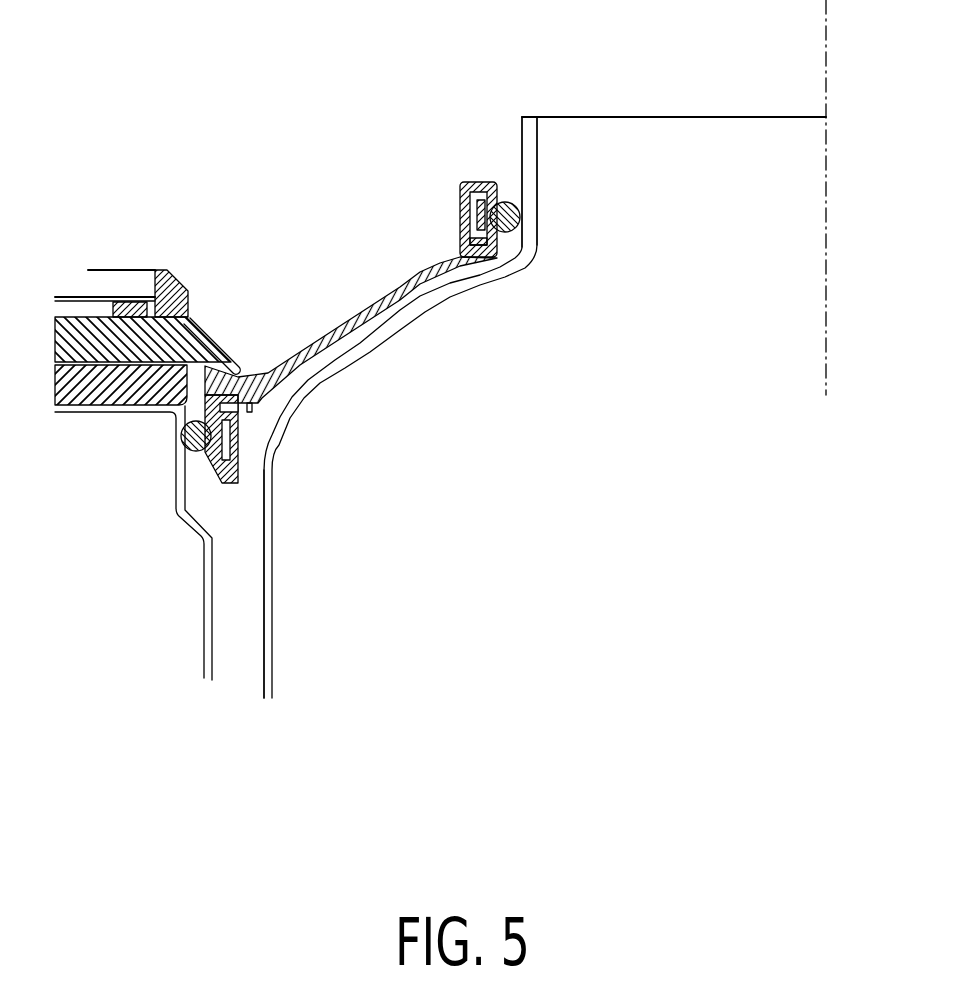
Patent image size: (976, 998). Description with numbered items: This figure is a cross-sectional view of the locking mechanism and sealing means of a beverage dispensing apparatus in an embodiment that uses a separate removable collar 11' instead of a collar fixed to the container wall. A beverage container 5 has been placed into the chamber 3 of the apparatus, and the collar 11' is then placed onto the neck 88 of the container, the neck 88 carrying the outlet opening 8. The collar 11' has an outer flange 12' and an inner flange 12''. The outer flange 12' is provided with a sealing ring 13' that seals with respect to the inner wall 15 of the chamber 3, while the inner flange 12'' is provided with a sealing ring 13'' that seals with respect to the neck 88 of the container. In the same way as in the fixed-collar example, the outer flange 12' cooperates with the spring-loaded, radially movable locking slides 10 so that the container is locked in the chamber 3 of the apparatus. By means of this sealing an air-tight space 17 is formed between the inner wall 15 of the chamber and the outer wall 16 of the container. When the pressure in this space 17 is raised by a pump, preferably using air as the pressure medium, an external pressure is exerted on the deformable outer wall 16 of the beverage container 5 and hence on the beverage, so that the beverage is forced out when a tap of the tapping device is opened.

The chamber 3 is at (198, 675).
The beverage container 5 is at (343, 355).
The outlet opening 8 is at (537, 188).
The neck 88 is at (533, 130).
The locking slides 10 is at (183, 338).
The collar 11' is at (351, 315).
The outer flange 12' is at (237, 378).
The inner flange 12'' is at (481, 170).
The sealing ring 13' is at (148, 445).
The sealing ring 13'' is at (502, 285).
The inner wall 15 is at (212, 595).
The outer wall 16 is at (265, 503).
The air-tight space 17 is at (235, 623).